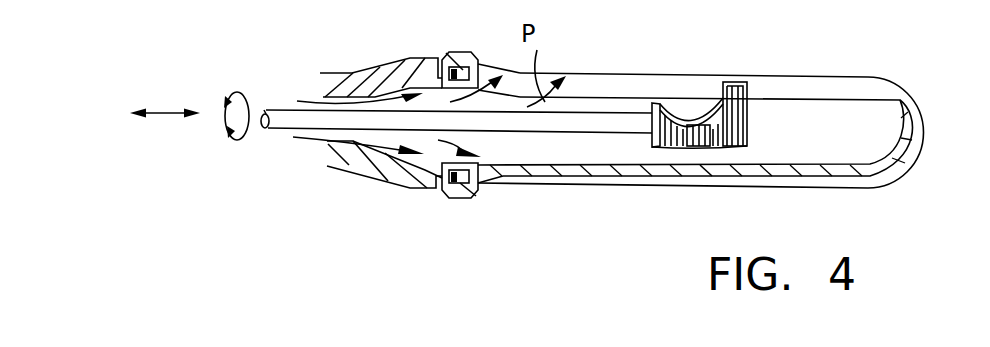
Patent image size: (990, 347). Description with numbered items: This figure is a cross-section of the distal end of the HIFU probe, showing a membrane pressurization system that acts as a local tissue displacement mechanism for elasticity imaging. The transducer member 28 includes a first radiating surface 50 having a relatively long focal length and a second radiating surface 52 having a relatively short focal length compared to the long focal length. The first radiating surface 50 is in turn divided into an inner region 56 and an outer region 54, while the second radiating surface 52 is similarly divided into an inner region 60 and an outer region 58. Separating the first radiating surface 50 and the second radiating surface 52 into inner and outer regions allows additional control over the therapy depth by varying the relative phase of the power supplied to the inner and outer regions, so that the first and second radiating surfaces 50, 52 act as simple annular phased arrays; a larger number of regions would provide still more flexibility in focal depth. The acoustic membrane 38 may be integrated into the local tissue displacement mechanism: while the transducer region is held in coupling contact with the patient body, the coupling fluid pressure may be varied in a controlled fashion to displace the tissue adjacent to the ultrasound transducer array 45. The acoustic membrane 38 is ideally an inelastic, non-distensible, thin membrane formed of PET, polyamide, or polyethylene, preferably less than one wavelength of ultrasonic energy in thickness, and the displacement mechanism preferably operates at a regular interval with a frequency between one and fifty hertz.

The transducer member 28 is at (509, 145).
The acoustic membrane 38 is at (897, 182).
The ultrasound transducer array 45 is at (745, 82).
The first radiating surface 50 is at (715, 160).
The second radiating surface 52 is at (710, 98).
The outer region 54 is at (748, 151).
The inner region 56 is at (690, 148).
The outer region 58 is at (665, 110).
The inner region 60 is at (697, 123).